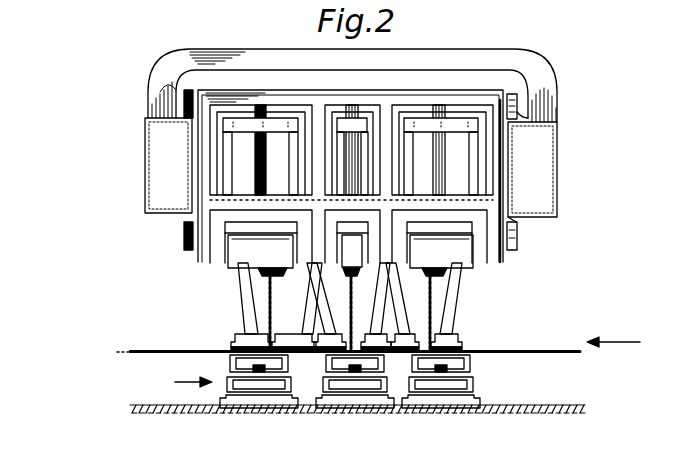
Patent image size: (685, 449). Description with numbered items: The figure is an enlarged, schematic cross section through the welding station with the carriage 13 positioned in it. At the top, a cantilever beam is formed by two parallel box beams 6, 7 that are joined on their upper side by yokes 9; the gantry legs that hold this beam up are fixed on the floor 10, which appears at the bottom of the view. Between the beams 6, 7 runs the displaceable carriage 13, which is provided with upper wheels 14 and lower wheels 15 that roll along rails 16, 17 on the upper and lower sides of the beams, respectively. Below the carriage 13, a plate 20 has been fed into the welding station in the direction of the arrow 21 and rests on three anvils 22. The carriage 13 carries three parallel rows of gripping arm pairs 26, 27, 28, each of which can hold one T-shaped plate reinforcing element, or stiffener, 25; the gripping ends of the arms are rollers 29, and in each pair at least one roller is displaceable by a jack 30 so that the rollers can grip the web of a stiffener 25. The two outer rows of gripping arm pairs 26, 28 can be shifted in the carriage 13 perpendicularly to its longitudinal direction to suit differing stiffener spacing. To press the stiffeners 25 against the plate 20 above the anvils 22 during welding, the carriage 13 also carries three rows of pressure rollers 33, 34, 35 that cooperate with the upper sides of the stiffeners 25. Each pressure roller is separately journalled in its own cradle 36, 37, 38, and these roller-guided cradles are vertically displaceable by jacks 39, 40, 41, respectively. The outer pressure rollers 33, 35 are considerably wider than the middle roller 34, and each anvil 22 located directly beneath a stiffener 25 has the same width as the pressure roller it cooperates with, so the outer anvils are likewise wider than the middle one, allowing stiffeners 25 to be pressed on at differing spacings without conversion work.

The box beam 6 is at (558, 148).
The box beam 7 is at (162, 216).
The yoke 9 is at (530, 64).
The floor 10 is at (132, 409).
The carriage 13 is at (252, 90).
The upper wheels 14 is at (180, 72).
The lower wheels 15 is at (187, 250).
The rail 16 is at (520, 118).
The rail 17 is at (518, 220).
The plate 20 is at (548, 350).
The arrow 21 is at (620, 342).
The anvil 22 is at (177, 379).
The plate reinforcing element 25 is at (390, 300).
The gripping arm pair 26 is at (405, 316).
The gripping arm pair 27 is at (420, 330).
The gripping arm pair 28 is at (243, 318).
The roller 29 is at (268, 320).
The jack 30 is at (235, 333).
The pressure roller 33 is at (453, 266).
The pressure roller 34 is at (352, 245).
The pressure roller 35 is at (298, 306).
The cradle 36 is at (475, 264).
The cradle 37 is at (345, 318).
The cradle 38 is at (222, 263).
The jack 39 is at (440, 173).
The jack 40 is at (350, 153).
The jack 41 is at (258, 160).